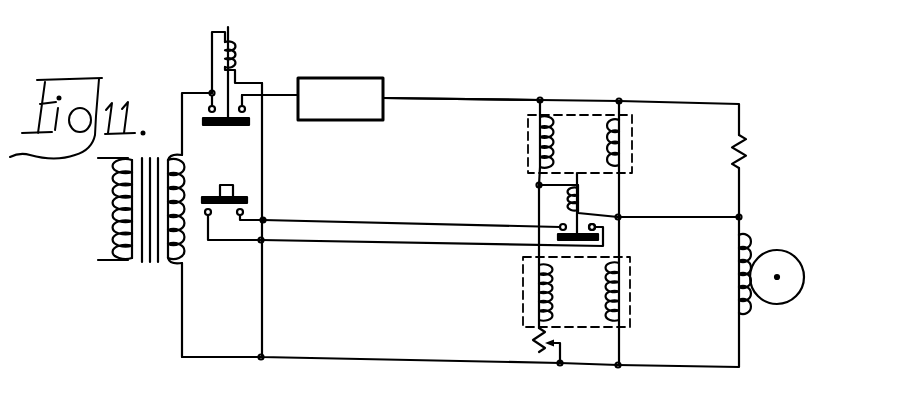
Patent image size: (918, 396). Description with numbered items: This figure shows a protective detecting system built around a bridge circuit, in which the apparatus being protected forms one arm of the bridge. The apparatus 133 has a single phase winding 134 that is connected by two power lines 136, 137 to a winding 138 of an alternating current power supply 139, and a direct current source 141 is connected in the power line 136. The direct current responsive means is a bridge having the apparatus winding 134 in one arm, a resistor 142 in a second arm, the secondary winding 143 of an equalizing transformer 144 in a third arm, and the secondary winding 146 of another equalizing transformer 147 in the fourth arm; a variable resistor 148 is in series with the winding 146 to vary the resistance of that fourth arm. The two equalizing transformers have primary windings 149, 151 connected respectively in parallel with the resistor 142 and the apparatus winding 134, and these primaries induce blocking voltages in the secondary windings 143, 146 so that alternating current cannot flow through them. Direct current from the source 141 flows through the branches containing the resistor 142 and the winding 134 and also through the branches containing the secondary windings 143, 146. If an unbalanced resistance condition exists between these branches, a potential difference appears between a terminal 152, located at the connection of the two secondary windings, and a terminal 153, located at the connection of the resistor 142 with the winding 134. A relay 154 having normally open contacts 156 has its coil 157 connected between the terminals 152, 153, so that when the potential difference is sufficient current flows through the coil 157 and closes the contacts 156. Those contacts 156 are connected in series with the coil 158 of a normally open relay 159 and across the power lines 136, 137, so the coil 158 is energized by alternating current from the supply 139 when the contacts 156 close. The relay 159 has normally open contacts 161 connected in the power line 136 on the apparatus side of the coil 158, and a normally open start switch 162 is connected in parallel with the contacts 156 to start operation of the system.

The apparatus 133 is at (757, 316).
The single phase winding 134 is at (731, 290).
The power line 136 is at (448, 97).
The power line 137 is at (338, 357).
The winding 138 is at (167, 268).
The alternating current power supply 139 is at (122, 277).
The direct current source 141 is at (363, 77).
The resistor 142 is at (746, 141).
The secondary winding 143 is at (535, 143).
The equalizing transformer 144 is at (567, 134).
The secondary winding 146 is at (535, 277).
The equalizing transformer 147 is at (576, 275).
The variable resistor 148 is at (537, 338).
The primary winding 149 is at (628, 131).
The primary winding 151 is at (621, 306).
The terminal 152 is at (535, 187).
The terminal 153 is at (743, 217).
The relay 154 is at (600, 215).
The contacts 156 is at (600, 235).
The relay coil 157 is at (584, 190).
The coil 158 is at (233, 58).
The relay 159 is at (224, 94).
The contacts 161 is at (248, 126).
The start switch 162 is at (252, 189).